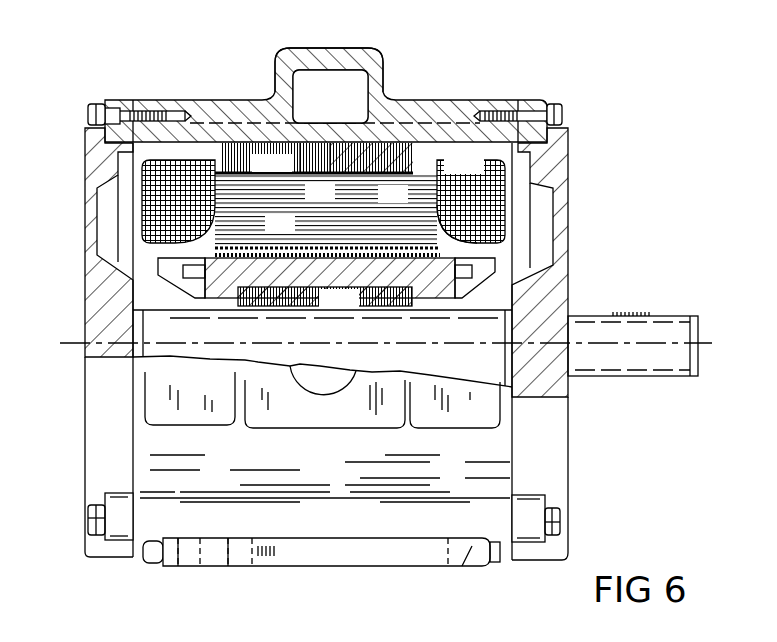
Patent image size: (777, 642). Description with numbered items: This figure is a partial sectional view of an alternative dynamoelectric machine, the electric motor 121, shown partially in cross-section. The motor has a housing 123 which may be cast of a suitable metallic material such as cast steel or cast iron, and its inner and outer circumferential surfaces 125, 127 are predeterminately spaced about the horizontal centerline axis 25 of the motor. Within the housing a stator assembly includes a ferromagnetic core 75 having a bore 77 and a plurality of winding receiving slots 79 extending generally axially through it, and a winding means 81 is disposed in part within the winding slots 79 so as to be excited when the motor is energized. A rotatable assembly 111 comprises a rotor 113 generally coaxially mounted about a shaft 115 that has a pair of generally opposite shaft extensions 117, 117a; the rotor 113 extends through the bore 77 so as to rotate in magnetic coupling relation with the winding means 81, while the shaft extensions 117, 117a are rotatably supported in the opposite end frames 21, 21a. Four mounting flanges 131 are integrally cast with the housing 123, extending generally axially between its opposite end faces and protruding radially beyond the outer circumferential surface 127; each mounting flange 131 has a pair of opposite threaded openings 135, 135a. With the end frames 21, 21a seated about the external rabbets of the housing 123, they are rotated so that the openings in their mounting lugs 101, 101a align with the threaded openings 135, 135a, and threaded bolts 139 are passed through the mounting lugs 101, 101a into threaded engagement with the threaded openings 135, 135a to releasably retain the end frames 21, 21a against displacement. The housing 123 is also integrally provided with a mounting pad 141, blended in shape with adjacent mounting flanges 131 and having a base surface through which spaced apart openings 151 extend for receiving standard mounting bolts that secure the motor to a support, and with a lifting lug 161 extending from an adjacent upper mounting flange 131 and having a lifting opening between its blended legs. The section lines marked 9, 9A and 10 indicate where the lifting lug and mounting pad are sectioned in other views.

The electric motor 121 is at (670, 119).
The outer circumferential surface 127 is at (223, 118).
The lifting lug 161 is at (385, 37).
The end frame 21 is at (570, 254).
The end frame 21a is at (90, 254).
The housing 123 is at (443, 141).
The rotatable assembly 111 is at (166, 245).
The inner circumferential surface 125 is at (240, 162).
The core 75 is at (301, 158).
The winding receiving slots 79 is at (363, 173).
The winding means 81 is at (487, 213).
The bore 77 is at (300, 246).
The rotor 113 is at (357, 309).
The shaft 115 is at (425, 371).
The shaft extension 117 is at (573, 317).
The shaft extension 117a is at (156, 313).
The horizontal centerline axis 25 is at (707, 343).
The mounting lug 101 is at (532, 100).
The mounting lug 101a is at (117, 100).
The mounting flange 131 is at (160, 100).
The threaded opening 135 is at (495, 100).
The threaded opening 135a is at (167, 115).
The threaded bolts 139 is at (88, 113).
The mounting pad 141 is at (372, 572).
The spaced apart openings 151 is at (182, 552).
The section line 9 is at (325, 18).
The section line 10 is at (458, 510).
The section line 9A is at (165, 630).